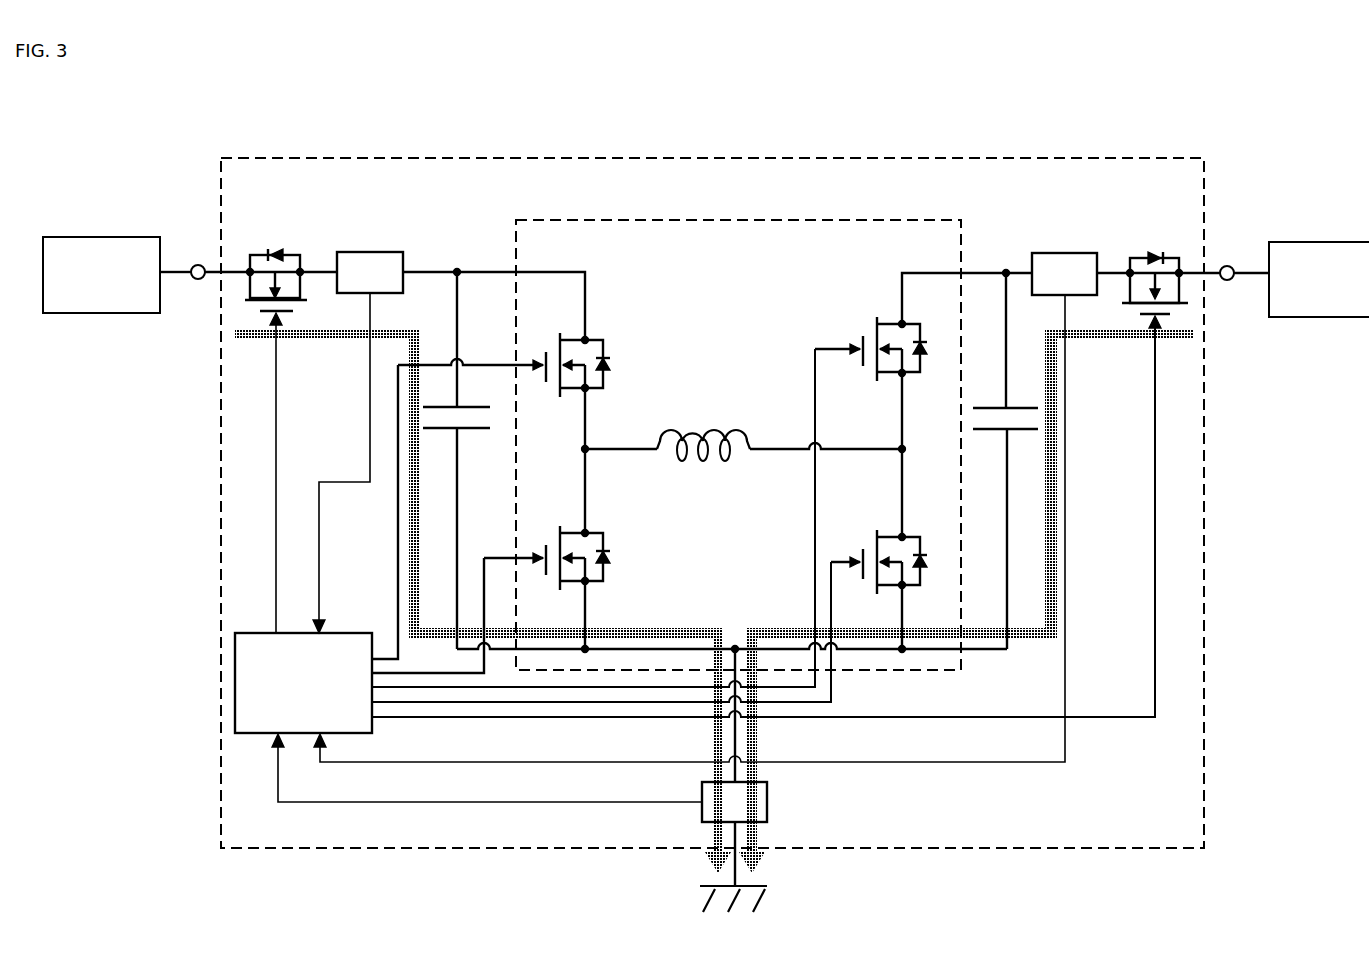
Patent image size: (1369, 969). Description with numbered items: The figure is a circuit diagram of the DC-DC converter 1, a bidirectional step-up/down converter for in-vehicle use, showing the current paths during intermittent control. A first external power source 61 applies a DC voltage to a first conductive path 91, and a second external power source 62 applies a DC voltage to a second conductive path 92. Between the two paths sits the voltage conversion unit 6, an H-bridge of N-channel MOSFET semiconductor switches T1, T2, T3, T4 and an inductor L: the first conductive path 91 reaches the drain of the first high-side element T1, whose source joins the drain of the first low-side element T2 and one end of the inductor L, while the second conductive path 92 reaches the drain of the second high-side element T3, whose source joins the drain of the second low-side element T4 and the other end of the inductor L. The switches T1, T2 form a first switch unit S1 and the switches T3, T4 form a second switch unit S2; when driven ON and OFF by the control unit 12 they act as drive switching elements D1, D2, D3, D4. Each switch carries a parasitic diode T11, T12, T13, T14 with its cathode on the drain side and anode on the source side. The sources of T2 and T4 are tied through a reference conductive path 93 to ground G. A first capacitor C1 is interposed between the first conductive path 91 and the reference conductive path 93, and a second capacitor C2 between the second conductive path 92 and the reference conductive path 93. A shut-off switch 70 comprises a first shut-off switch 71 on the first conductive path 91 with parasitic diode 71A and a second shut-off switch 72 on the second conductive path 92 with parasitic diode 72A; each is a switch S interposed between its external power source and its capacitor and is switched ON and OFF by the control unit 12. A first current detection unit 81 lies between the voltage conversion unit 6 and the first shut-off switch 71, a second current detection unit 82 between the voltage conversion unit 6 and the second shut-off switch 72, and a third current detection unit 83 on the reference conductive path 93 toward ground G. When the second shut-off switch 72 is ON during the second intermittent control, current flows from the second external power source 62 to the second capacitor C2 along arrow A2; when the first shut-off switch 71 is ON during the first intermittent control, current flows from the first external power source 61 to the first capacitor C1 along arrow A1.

The DC-DC converter 1 is at (1120, 158).
The voltage conversion unit 6 is at (812, 220).
The control unit 12 is at (253, 733).
The first external power source 61 is at (115, 237).
The second external power source 62 is at (1314, 242).
The shut-off switch 70 is at (248, 287).
The first shut-off switch 71 is at (248, 283).
The second shut-off switch 72 is at (1182, 282).
The parasitic diode 71A is at (286, 255).
The parasitic diode 72A is at (1165, 258).
The first current detection unit 81 is at (362, 252).
The second current detection unit 82 is at (1072, 253).
The third current detection unit 83 is at (767, 805).
The first conductive path 91 is at (213, 268).
The second conductive path 92 is at (1213, 268).
The reference conductive path 93 is at (988, 650).
The arrow A1 is at (438, 638).
The arrow A2 is at (1057, 518).
The first capacitor C1 is at (470, 430).
The second capacitor C2 is at (993, 430).
The inductor L is at (700, 433).
The ground G is at (702, 881).
The switch S is at (248, 290).
The first switch unit S1 is at (604, 342).
The second switch unit S2 is at (892, 322).
The semiconductor switch T1 is at (585, 338).
The semiconductor switch T2 is at (578, 531).
The semiconductor switch T3 is at (887, 322).
The semiconductor switch T4 is at (887, 535).
The drive switching element D1 is at (562, 338).
The drive switching element D2 is at (586, 531).
The drive switching element D3 is at (882, 322).
The drive switching element D4 is at (880, 535).
The parasitic diode T11 is at (604, 386).
The parasitic diode T12 is at (604, 580).
The parasitic diode T13 is at (920, 326).
The parasitic diode T14 is at (920, 539).